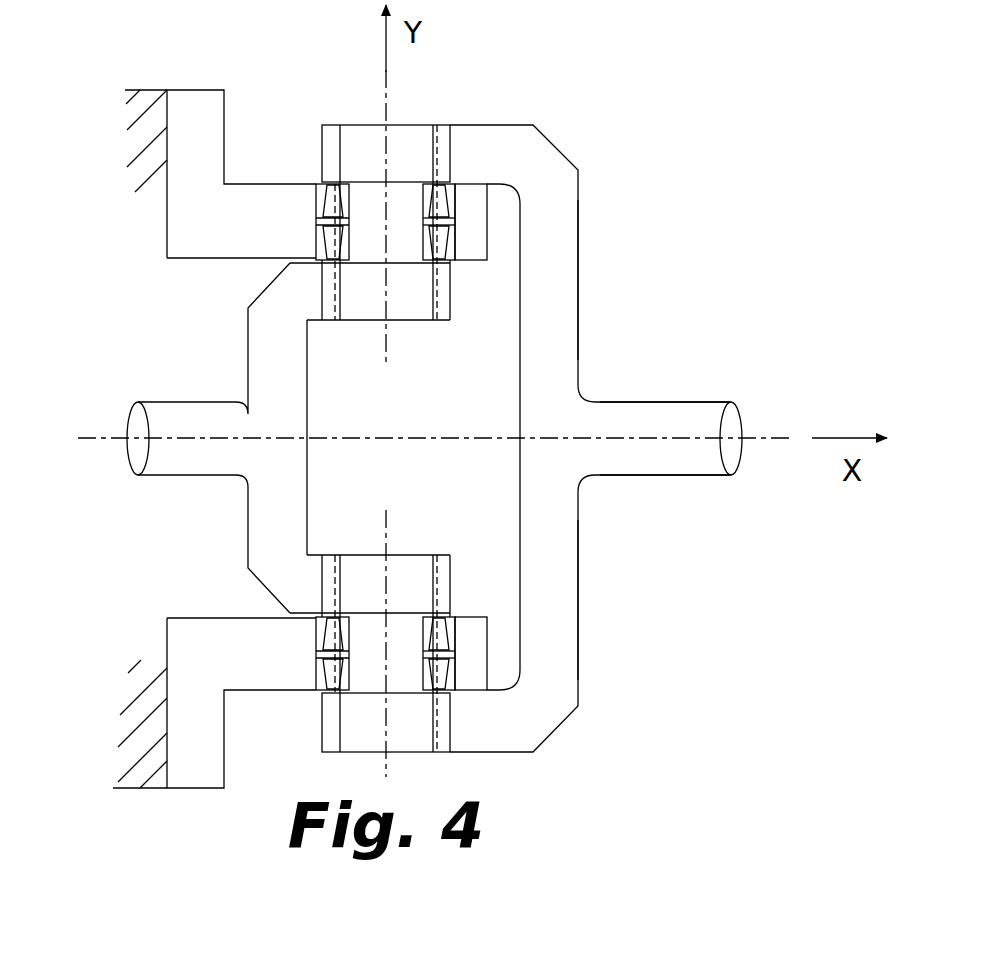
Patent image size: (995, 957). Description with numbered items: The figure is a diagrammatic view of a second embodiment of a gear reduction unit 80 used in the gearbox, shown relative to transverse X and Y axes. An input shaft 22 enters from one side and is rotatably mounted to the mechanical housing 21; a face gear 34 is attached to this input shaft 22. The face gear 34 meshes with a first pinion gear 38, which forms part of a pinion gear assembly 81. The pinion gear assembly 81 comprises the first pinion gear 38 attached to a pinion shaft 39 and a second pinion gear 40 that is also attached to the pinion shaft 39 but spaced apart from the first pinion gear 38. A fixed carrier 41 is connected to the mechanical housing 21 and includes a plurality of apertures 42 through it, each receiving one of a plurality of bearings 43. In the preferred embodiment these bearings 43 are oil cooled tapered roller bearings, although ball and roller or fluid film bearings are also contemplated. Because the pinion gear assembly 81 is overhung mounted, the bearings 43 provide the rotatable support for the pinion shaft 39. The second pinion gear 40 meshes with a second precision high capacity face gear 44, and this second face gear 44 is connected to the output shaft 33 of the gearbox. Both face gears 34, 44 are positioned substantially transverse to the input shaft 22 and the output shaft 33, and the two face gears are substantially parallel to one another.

The mechanical housing 21 is at (150, 148).
The input shaft 22 is at (190, 410).
The output shaft 33 is at (678, 423).
The face gear 34 is at (280, 378).
The first pinion gear 38 is at (367, 307).
The pinion shaft 39 is at (355, 231).
The second pinion gear 40 is at (417, 167).
The fixed carrier 41 is at (173, 205).
The apertures 42 is at (440, 203).
The bearings 43 is at (343, 233).
The second face gear 44 is at (563, 485).
The gear reduction unit 80 is at (677, 173).
The pinion gear assembly 81 is at (490, 232).